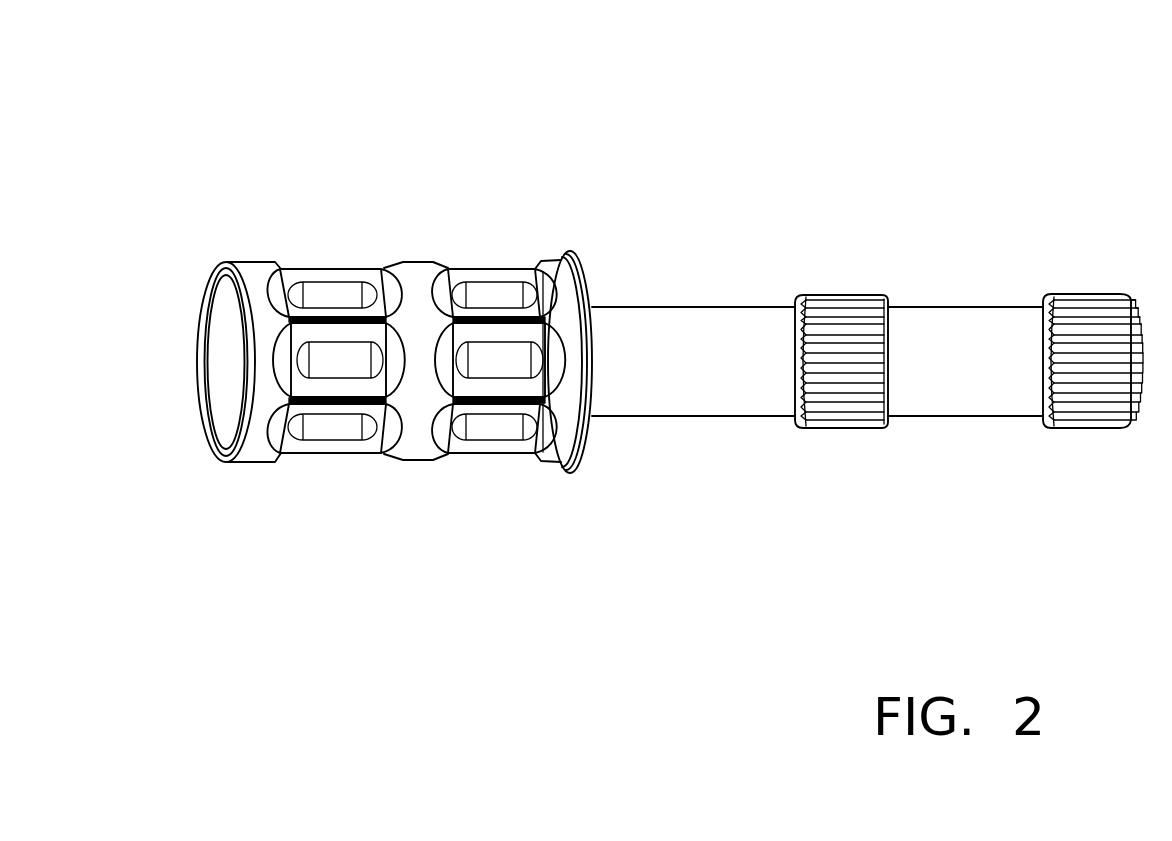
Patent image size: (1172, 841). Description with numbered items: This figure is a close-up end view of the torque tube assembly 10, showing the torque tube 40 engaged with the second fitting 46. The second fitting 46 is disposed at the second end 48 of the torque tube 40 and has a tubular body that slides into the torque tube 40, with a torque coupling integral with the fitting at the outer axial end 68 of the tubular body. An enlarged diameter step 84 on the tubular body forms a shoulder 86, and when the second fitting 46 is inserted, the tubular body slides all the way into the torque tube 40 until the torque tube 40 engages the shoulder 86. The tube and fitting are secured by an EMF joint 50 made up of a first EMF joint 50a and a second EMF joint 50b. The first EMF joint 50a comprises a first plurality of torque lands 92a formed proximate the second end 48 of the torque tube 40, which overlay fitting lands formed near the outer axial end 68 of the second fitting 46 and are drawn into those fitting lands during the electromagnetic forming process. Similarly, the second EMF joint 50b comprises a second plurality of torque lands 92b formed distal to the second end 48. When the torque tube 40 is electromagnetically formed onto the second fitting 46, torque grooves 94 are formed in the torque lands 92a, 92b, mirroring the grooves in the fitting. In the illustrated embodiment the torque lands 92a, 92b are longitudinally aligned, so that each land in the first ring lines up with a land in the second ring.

The torque tube assembly 10 is at (606, 81).
The torque tube 40 is at (248, 268).
The second fitting 46 is at (583, 270).
The second end 48 is at (568, 549).
The EMF joint 50 is at (450, 240).
The first EMF joint 50a is at (485, 496).
The second EMF joint 50b is at (328, 488).
The outer axial end 68 is at (647, 267).
The enlarged diameter step 84 is at (583, 436).
The shoulder 86 is at (549, 266).
The first plurality of torque lands 92a is at (519, 475).
The second plurality of torque lands 92b is at (357, 475).
The torque grooves 94 is at (317, 293).